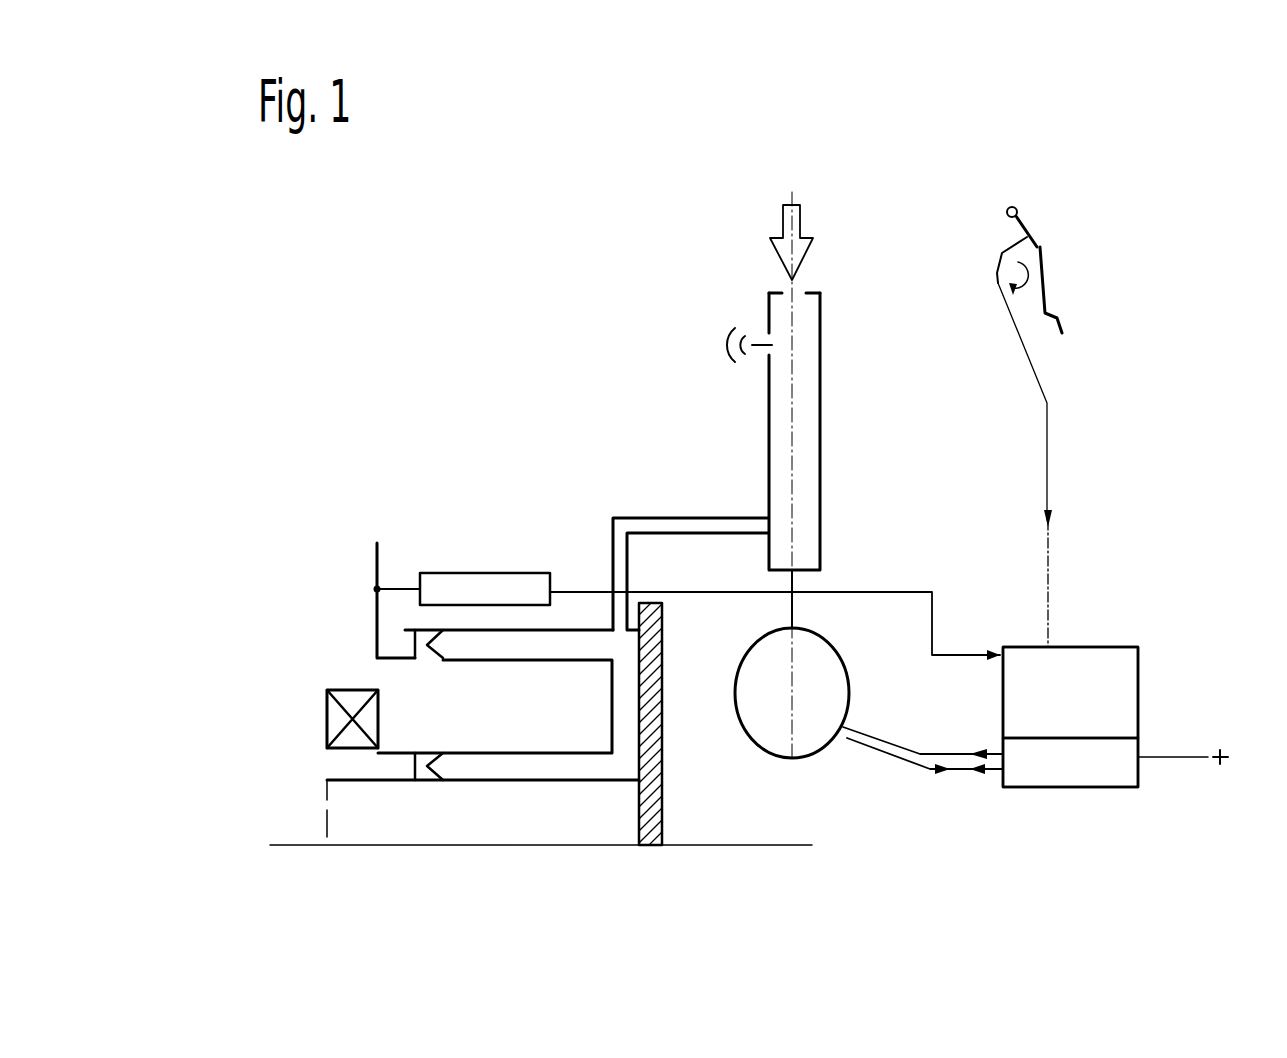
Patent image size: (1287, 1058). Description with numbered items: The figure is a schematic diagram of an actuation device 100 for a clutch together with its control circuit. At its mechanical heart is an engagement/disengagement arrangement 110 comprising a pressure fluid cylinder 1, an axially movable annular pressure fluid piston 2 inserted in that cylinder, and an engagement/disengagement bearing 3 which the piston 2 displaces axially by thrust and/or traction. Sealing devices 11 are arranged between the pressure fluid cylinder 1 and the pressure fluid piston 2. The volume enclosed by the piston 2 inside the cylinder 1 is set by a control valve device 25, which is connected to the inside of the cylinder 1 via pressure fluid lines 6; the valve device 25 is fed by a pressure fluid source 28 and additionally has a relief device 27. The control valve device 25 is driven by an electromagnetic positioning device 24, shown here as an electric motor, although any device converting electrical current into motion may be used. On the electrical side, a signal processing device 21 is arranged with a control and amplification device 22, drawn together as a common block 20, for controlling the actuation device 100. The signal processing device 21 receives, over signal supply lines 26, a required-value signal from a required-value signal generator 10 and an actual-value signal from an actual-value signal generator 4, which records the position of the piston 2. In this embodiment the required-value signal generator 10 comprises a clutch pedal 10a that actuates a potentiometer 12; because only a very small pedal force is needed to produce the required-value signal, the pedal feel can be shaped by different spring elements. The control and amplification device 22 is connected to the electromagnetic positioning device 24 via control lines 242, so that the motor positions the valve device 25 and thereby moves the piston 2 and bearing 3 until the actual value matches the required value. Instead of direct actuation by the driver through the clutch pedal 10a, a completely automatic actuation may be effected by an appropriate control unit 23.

The pressure fluid cylinder 1 is at (467, 823).
The pressure fluid piston 2 is at (376, 627).
The engagement/disengagement bearing 3 is at (327, 710).
The actual-value signal generator 4 is at (502, 588).
The pressure fluid lines 6 is at (650, 517).
The required-value signal generator 10 is at (1040, 247).
The clutch pedal 10a is at (1042, 277).
The sealing devices 11 is at (423, 640).
The potentiometer 12 is at (997, 267).
The control unit 20 is at (1118, 647).
The signal processing device 21 is at (1070, 692).
The control and amplification device 22 is at (1070, 763).
The control unit 23 is at (1138, 780).
The electromagnetic positioning device 24 is at (772, 760).
The control lines 242 is at (905, 755).
The control valve device 25 is at (820, 402).
The signal supply lines 26 is at (912, 593).
The relief device 27 is at (717, 346).
The pressure fluid source 28 is at (788, 200).
The actuation device 100 is at (602, 290).
The engagement/disengagement arrangement 110 is at (263, 602).